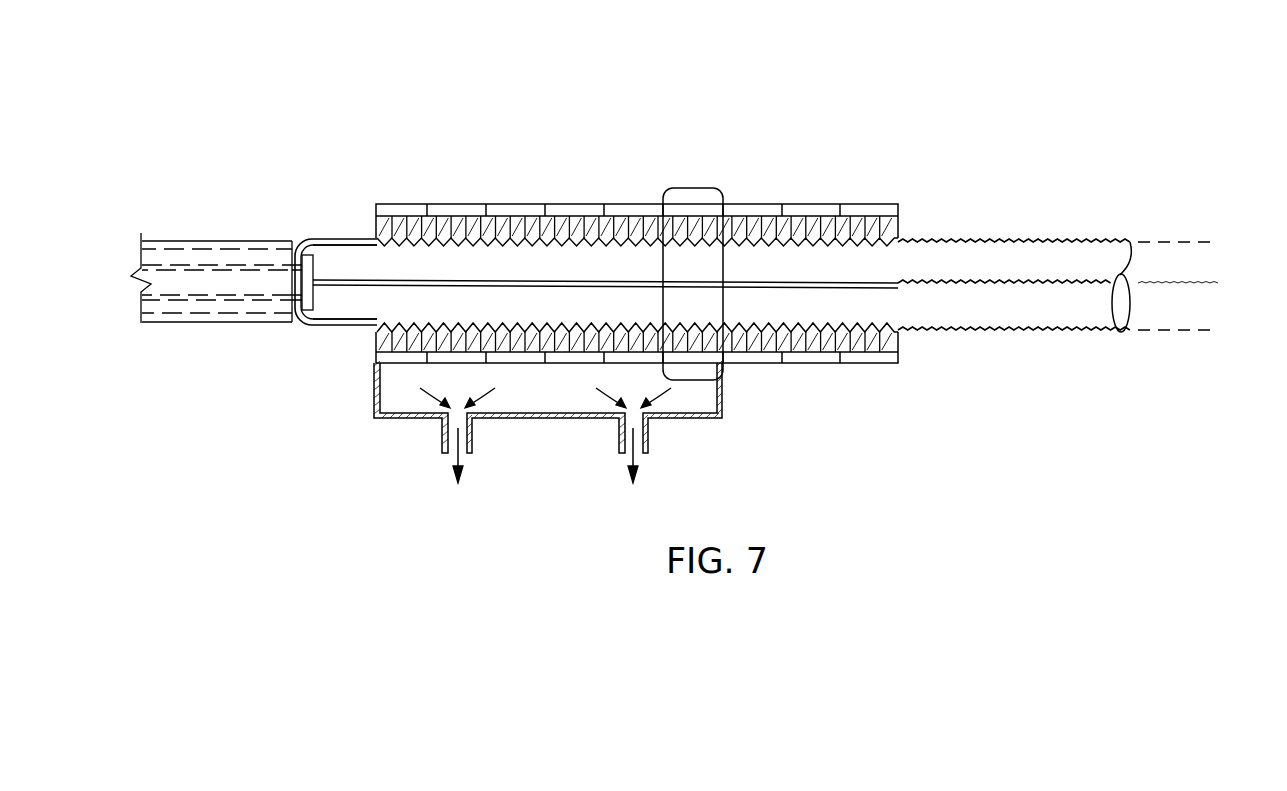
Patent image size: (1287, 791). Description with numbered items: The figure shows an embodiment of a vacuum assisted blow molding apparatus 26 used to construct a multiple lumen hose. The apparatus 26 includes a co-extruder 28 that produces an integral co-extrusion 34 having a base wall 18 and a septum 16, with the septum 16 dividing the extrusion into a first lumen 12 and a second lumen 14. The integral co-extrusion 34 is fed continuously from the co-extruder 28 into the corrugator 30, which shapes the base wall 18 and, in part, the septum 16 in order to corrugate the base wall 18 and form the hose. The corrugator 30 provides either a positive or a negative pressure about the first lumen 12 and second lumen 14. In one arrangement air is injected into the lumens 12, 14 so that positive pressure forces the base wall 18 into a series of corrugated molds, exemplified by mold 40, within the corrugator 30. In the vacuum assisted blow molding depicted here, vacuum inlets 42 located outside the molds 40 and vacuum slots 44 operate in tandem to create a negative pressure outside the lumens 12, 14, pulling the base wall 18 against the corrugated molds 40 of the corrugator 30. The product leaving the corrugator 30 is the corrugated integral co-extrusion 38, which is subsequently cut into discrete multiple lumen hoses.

The first lumen 12 is at (473, 273).
The second lumen 14 is at (473, 316).
The septum 16 is at (398, 278).
The base wall 18 is at (332, 240).
The apparatus 26 is at (812, 88).
The co-extruder 28 is at (201, 240).
The corrugator 30 is at (376, 146).
The integral co-extrusion 34 is at (337, 330).
The corrugated integral co-extrusion 38 is at (1050, 237).
The mold 40 is at (706, 189).
The vacuum inlet 42 is at (647, 455).
The vacuum slot 44 is at (613, 348).